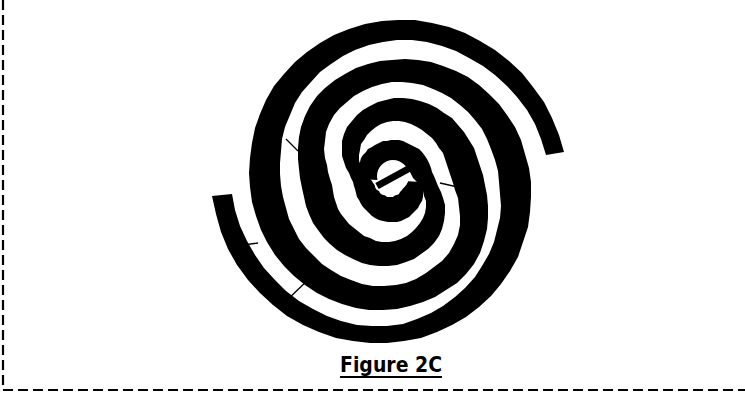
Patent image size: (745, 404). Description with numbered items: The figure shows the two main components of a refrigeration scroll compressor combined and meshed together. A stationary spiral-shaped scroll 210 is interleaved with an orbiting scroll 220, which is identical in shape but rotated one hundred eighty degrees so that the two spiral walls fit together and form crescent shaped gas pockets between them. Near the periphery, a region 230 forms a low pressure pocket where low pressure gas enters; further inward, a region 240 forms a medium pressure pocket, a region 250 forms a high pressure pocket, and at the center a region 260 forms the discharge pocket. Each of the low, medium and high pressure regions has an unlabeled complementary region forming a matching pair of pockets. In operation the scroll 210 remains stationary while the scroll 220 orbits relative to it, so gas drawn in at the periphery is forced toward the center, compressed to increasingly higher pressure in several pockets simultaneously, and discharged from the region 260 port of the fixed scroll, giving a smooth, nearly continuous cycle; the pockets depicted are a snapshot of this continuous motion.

The stationary scroll 210 is at (553, 118).
The orbiting scroll 220 is at (483, 287).
The region forming low pressure pocket 230 is at (236, 246).
The region forming medium pressure pocket 240 is at (258, 114).
The region forming high pressure pocket 250 is at (478, 200).
The region forming center discharge pocket 260 is at (283, 304).